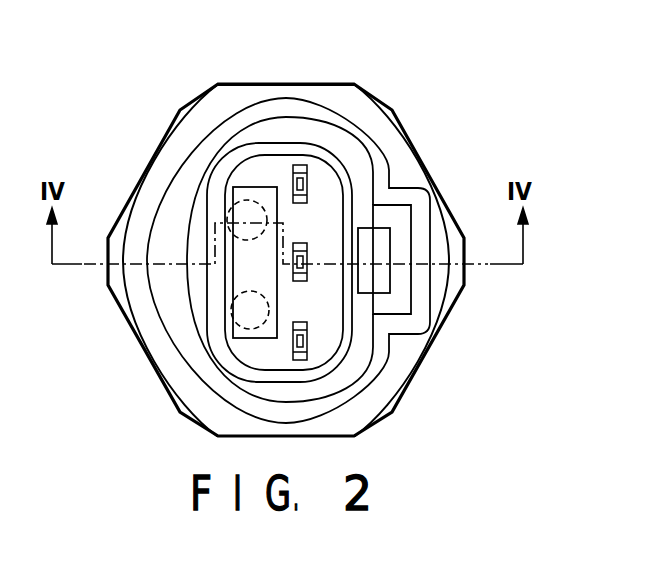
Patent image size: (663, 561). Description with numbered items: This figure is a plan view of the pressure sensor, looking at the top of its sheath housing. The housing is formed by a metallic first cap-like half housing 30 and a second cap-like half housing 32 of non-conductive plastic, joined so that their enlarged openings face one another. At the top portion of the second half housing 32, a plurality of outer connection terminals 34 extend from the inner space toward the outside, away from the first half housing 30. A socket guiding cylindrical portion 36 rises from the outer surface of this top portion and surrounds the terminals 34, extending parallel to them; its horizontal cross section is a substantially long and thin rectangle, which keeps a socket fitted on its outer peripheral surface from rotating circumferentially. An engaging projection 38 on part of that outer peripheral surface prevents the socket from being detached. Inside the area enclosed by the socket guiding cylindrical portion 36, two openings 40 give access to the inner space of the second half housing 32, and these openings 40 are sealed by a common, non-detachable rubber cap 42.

The first cap-like half housing 30 is at (400, 404).
The second cap-like half housing 32 is at (158, 304).
The outer connection terminals 34 is at (308, 186).
The socket guiding cylindrical portion 36 is at (320, 130).
The engaging projection 38 is at (445, 284).
The openings 40 is at (233, 196).
The rubber cap 42 is at (267, 187).